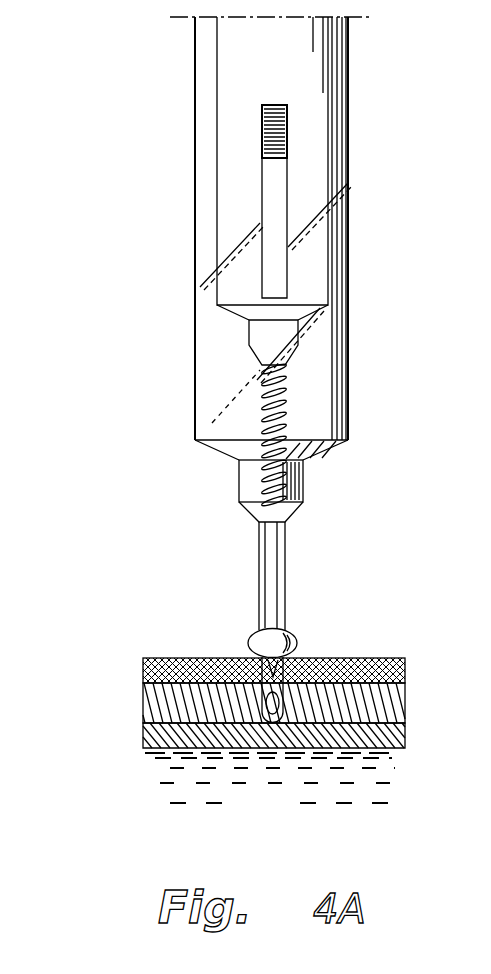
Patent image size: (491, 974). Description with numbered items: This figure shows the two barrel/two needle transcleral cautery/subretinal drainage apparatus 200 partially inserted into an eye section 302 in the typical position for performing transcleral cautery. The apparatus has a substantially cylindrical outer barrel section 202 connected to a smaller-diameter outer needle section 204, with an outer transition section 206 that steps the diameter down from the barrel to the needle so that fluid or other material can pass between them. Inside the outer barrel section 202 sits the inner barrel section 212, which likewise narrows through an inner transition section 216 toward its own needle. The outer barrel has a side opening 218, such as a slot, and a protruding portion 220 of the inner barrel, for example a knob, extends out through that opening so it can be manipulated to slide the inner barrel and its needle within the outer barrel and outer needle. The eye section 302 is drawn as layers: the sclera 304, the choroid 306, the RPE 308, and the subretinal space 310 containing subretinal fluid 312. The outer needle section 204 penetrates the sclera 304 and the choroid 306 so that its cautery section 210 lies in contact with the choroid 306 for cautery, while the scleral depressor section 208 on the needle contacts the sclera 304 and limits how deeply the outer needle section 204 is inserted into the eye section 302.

The two barrel/two needle transcleral cautery/subretinal drainage apparatus 200 is at (68, 186).
The outer barrel section 202 is at (348, 287).
The outer needle section 204 is at (285, 600).
The outer transition section 206 is at (364, 438).
The scleral depressor section 208 is at (297, 645).
The cautery section 210 is at (232, 669).
The inner barrel section 212 is at (217, 247).
The inner transition section 216 is at (249, 342).
The side opening 218 is at (262, 268).
The protruding portion 220 is at (267, 130).
The eye section 302 is at (278, 735).
The sclera 304 is at (137, 659).
The choroid 306 is at (137, 685).
The RPE 308 is at (137, 725).
The subretinal space 310 is at (239, 781).
The subretinal fluid 312 is at (292, 810).